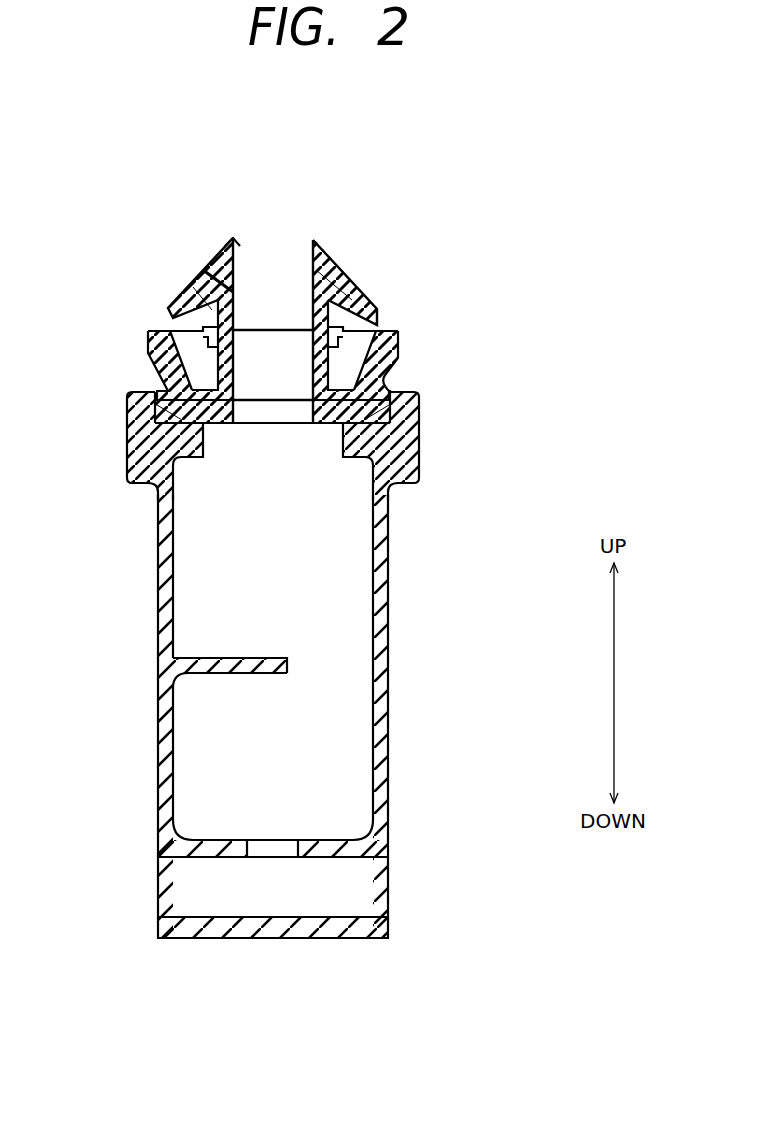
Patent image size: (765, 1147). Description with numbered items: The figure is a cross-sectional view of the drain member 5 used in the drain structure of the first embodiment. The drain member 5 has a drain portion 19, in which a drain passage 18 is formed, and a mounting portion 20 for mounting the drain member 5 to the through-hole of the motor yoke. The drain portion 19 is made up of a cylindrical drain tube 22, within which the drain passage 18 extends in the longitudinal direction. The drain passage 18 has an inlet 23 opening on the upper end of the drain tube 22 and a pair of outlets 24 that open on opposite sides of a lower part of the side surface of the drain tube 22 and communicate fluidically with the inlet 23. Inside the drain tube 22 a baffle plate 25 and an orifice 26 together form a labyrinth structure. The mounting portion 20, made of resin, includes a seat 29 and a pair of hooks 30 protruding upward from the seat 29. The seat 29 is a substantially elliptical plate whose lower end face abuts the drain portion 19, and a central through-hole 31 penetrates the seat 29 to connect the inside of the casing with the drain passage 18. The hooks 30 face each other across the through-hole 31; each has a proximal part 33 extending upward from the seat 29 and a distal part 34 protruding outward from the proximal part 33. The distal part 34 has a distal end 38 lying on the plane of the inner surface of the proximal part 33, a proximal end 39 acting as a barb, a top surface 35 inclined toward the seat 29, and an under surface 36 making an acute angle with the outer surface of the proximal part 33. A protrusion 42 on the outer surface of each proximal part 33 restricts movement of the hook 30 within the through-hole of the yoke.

The drain member 5 is at (463, 168).
The drain passage 18 is at (308, 583).
The drain portion 19 is at (140, 777).
The mounting portion 20 is at (378, 293).
The drain tube 22 is at (387, 647).
The inlet 23 is at (273, 430).
The outlets 24 is at (173, 887).
The baffle plate 25 is at (265, 670).
The orifice 26 is at (273, 843).
The seat 29 is at (143, 447).
The hooks 30 is at (240, 260).
The through-hole 31 is at (240, 412).
The proximal part 33 is at (183, 372).
The distal part 34 is at (195, 288).
The top surface 35 is at (208, 280).
The under surface 36 is at (150, 333).
The distal end 38 is at (232, 233).
The proximal end 39 is at (160, 321).
The protrusion 42 is at (203, 342).